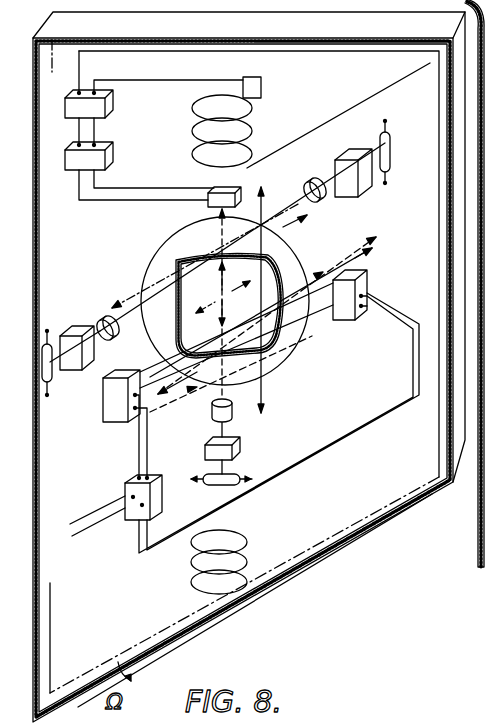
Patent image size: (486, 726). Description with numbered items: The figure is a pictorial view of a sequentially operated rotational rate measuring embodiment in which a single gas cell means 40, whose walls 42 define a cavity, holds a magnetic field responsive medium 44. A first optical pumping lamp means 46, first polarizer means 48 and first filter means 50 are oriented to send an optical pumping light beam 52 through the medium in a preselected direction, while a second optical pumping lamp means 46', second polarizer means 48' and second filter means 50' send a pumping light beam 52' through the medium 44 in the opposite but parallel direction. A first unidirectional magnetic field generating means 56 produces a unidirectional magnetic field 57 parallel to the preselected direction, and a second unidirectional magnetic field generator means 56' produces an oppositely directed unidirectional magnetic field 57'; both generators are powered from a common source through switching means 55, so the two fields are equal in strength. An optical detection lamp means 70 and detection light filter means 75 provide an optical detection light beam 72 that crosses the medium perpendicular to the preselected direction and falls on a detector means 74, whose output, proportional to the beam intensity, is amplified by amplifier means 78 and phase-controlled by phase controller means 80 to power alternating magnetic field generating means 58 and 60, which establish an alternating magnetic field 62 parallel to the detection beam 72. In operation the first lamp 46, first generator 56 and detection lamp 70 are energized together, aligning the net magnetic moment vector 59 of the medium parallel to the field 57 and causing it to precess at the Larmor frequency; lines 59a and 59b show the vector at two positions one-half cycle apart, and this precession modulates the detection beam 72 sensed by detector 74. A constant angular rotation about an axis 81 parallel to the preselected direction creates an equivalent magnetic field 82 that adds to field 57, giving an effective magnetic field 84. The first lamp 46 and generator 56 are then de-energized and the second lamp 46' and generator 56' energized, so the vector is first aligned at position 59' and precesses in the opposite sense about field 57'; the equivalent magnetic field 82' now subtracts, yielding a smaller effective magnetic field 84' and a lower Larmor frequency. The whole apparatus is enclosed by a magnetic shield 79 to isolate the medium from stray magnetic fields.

The gas cell means 40 is at (297, 268).
The walls 42 is at (284, 256).
The magnetic field responsive medium 44 is at (157, 268).
The first optical pumping lamp means 46 is at (51, 375).
The second optical pumping lamp means 46' is at (400, 151).
The first polarizer means 48 is at (72, 334).
The second polarizer means 48' is at (353, 160).
The first filter means 50 is at (103, 312).
The second filter means 50' is at (308, 182).
The optical pumping light beam 52 is at (311, 214).
The pumping light beam 52' is at (202, 255).
The switching means 55 is at (125, 490).
The first unidirectional magnetic field generating means 56 is at (121, 424).
The second unidirectional magnetic field generator means 56' is at (279, 411).
The unidirectional magnetic field 57 is at (222, 327).
The unidirectional magnetic field 57' is at (242, 346).
The alternating magnetic field generating means 58 is at (247, 541).
The net magnetic moment vector 59 is at (240, 294).
The net magnetic moment vector position 59' is at (200, 301).
The net magnetic moment vector line 59a is at (236, 278).
The net magnetic moment vector line 59b is at (220, 316).
The alternating magnetic field generating means 60 is at (246, 116).
The alternating magnetic field 62 is at (263, 387).
The optical detection lamp means 70 is at (203, 485).
The optical detection light beam 72 is at (222, 220).
The detector means 74 is at (213, 190).
The detection light filter means 75 is at (233, 414).
The amplifier means 78 is at (113, 157).
The magnetic shield 79 is at (432, 498).
The phase controller means 80 is at (113, 107).
The axis 81 is at (226, 641).
The equivalent magnetic field 82 is at (274, 303).
The beam path 82' is at (174, 410).
The effective magnetic field 84 is at (373, 262).
The effective magnetic field 84' is at (247, 374).